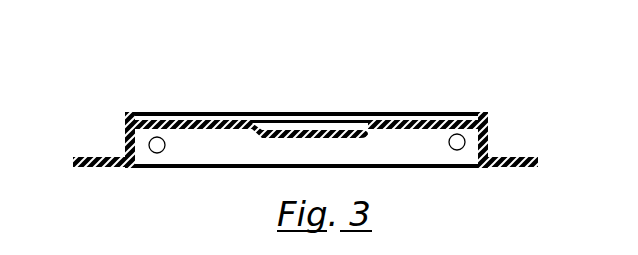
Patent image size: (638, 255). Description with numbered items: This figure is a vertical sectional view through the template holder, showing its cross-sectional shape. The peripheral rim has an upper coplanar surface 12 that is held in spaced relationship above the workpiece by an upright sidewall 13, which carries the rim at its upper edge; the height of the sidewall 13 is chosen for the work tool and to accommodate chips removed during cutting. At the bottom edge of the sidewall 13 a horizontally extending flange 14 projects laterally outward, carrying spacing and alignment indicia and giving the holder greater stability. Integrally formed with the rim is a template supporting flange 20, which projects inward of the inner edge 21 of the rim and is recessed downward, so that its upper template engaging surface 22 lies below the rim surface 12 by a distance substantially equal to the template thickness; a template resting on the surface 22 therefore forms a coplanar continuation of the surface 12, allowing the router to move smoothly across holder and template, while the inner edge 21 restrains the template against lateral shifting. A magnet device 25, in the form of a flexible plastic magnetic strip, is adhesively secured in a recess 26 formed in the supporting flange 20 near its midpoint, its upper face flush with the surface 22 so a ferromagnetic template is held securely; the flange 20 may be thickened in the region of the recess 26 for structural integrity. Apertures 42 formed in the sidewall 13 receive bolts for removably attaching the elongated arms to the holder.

The upper coplanar surface 12 is at (471, 115).
The upright sidewall 13 is at (489, 132).
The horizontally extending flange 14 is at (519, 158).
The template supporting flange 20 is at (212, 130).
The inner edge 21 is at (465, 121).
The upper template engaging surface 22 is at (212, 118).
The magnet device 25 is at (329, 125).
The recess 26 is at (353, 131).
The aperture 42 is at (162, 152).